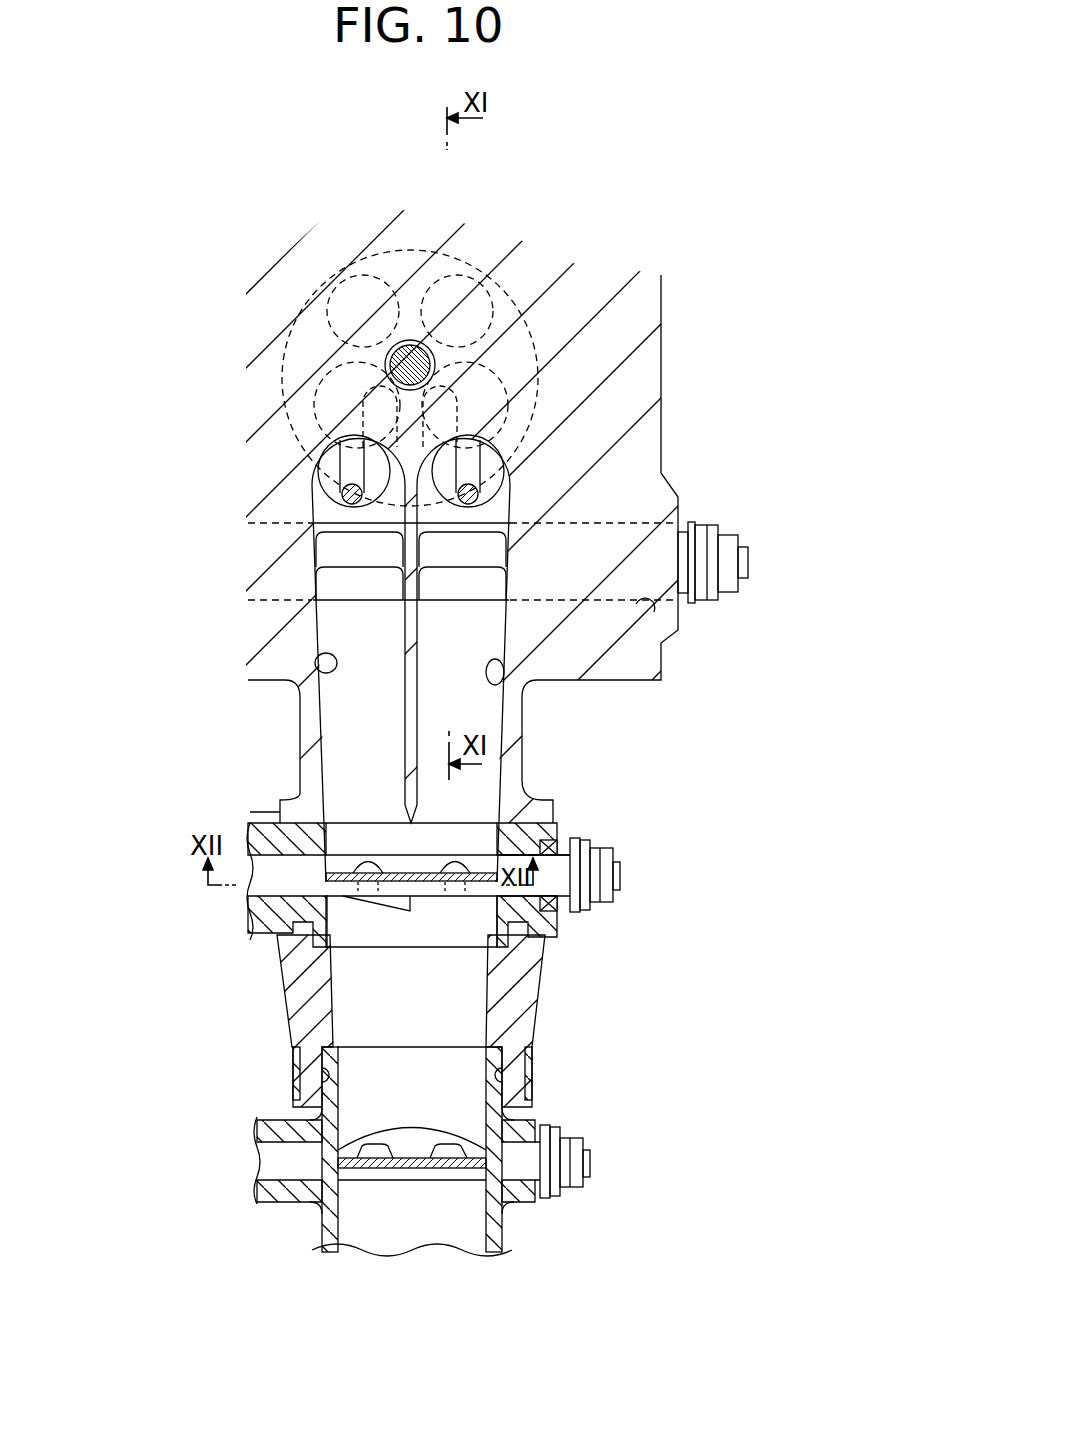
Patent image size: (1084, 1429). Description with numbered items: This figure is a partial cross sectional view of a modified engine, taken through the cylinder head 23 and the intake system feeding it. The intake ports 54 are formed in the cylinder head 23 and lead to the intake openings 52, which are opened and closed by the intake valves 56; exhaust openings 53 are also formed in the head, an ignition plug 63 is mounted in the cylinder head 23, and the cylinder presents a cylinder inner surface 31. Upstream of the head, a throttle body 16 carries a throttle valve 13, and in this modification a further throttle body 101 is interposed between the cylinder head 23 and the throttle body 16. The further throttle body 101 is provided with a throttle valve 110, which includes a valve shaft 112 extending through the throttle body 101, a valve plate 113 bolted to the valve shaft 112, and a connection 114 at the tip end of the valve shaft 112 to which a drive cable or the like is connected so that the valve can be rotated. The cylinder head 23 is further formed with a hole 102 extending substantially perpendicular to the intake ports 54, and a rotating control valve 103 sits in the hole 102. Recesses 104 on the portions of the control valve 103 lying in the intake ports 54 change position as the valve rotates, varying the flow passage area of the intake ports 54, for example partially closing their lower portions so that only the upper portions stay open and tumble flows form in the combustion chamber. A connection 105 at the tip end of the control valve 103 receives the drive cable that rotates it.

The throttle valve 13 is at (406, 1167).
The throttle body 16 is at (540, 1027).
The cylinder head 23 is at (663, 418).
The cylinder inner surface 31 is at (513, 313).
The intake opening 52 is at (313, 392).
The exhaust opening 53 is at (350, 273).
The intake port 54 is at (322, 670).
The intake valve 56 is at (352, 478).
The ignition plug 63 is at (411, 355).
The throttle body 101 is at (560, 827).
The hole 102 is at (654, 612).
The control valve 103 is at (758, 562).
The recess 104 is at (365, 552).
The connection 105 is at (695, 522).
The throttle valve 110 is at (558, 875).
The valve shaft 112 is at (480, 897).
The valve plate 113 is at (380, 918).
The connection 114 is at (583, 847).